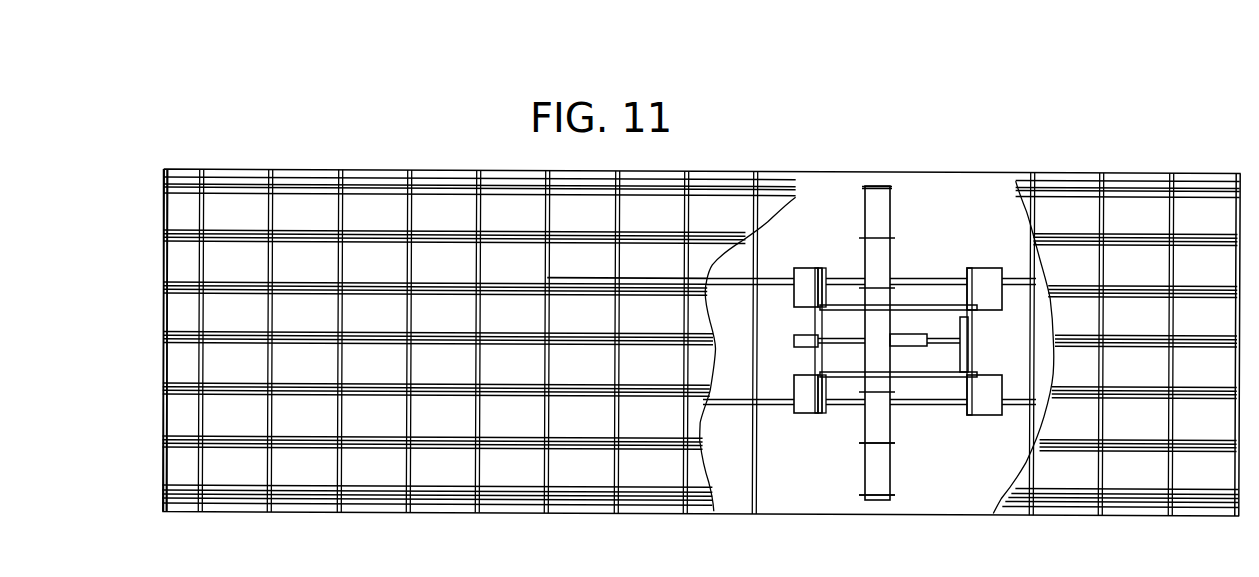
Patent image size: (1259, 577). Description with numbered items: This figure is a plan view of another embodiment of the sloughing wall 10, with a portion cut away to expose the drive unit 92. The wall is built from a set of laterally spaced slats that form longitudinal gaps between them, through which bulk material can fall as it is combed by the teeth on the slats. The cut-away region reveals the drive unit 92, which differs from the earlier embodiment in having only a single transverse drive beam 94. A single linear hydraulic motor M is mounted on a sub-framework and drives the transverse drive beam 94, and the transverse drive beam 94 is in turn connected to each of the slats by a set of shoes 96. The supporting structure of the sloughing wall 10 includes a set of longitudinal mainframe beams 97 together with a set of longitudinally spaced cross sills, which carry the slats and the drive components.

The sloughing wall 10 is at (261, 146).
The drive unit 92 is at (984, 203).
The transverse drive beam 94 is at (895, 203).
The shoes 96 is at (878, 494).
The longitudinal mainframe beams 97 is at (821, 178).
The linear hydraulic motor M is at (918, 336).